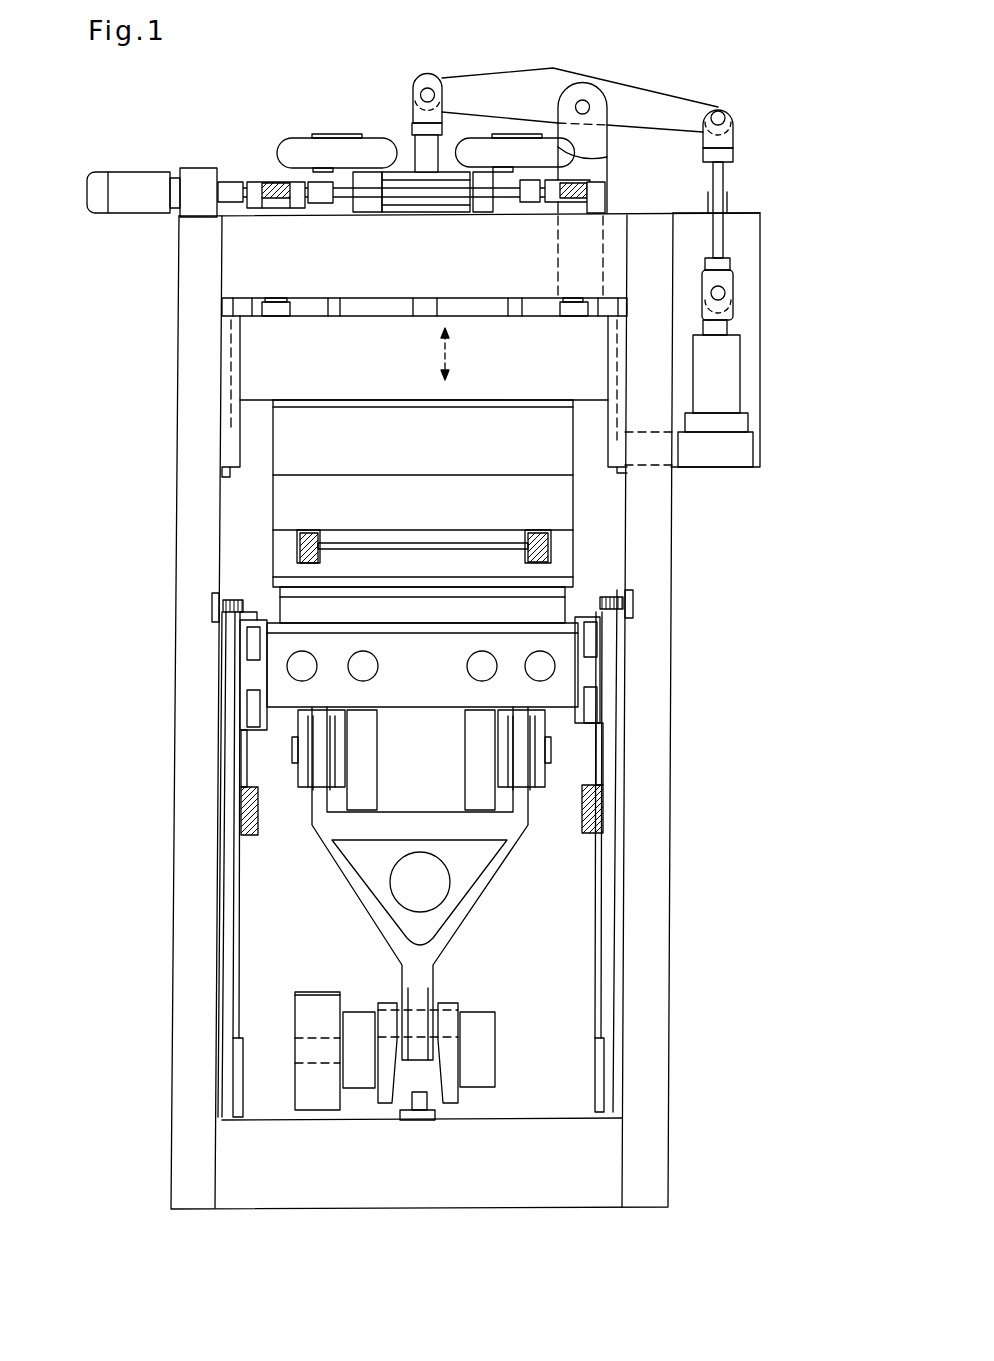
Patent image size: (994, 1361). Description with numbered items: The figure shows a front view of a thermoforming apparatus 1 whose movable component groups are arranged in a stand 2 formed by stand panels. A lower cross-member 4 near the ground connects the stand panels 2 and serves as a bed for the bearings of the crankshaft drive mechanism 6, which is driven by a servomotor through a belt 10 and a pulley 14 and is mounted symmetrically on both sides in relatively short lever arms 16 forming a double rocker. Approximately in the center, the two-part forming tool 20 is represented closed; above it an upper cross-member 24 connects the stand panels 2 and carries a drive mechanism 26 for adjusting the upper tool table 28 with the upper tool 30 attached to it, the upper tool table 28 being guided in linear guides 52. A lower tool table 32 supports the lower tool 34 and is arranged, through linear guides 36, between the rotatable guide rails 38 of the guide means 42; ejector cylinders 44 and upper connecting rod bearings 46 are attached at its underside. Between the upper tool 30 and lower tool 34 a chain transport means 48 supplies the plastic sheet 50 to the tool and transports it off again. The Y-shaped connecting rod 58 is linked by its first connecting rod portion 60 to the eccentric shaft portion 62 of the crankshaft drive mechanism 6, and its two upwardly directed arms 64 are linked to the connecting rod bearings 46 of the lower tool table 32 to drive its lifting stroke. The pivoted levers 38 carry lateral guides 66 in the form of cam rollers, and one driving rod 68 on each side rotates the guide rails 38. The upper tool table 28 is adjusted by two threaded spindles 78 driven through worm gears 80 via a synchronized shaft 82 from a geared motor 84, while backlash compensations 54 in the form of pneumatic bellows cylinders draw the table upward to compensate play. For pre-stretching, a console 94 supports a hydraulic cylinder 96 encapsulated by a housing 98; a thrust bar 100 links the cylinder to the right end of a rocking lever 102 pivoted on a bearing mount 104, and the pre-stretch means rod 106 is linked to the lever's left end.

The thermoforming apparatus 1 is at (302, 108).
The stand 2 is at (200, 848).
The cross-member 4 is at (537, 1163).
The crankshaft drive mechanism 6 is at (385, 1072).
The belt 10 is at (315, 1113).
The pulley 14 is at (312, 1090).
The lever arms 16 is at (363, 1028).
The two-part forming tool 20 is at (165, 513).
The cross-member 24 is at (613, 257).
The drive mechanism 26 is at (252, 310).
The upper tool table 28 is at (593, 365).
The upper tool 30 is at (283, 435).
The lower tool table 32 is at (553, 690).
The lower tool 34 is at (507, 560).
The linear guides 36 is at (250, 717).
The rotatable guide rails 38 is at (607, 933).
The guide means 42 is at (675, 813).
The ejector cylinders 44 is at (357, 797).
The upper connecting rod bearings 46 is at (305, 775).
The chain transport means 48 is at (300, 547).
The plastic sheet 50 is at (507, 540).
The linear guides 52 is at (223, 358).
The backlash compensation 54 is at (613, 137).
The connecting rod 58 is at (350, 882).
The first connecting rod portion 60 is at (418, 1002).
The eccentric shaft portion 62 is at (440, 1017).
The arms 64 is at (323, 752).
The pivoted lever lateral guides 66 is at (624, 602).
The driving rod 68 is at (602, 827).
The threaded spindles 78 is at (277, 302).
The worm gears 80 is at (267, 177).
The synchronized shaft 82 is at (400, 192).
The geared motor 84 is at (132, 187).
The console 94 is at (733, 447).
The hydraulic cylinder 96 is at (723, 400).
The housing 98 is at (760, 277).
The thrust bar 100 is at (725, 180).
The rocking lever 102 is at (680, 110).
The bearing mount 104 is at (583, 105).
The pre-stretch means rod 106 is at (420, 152).